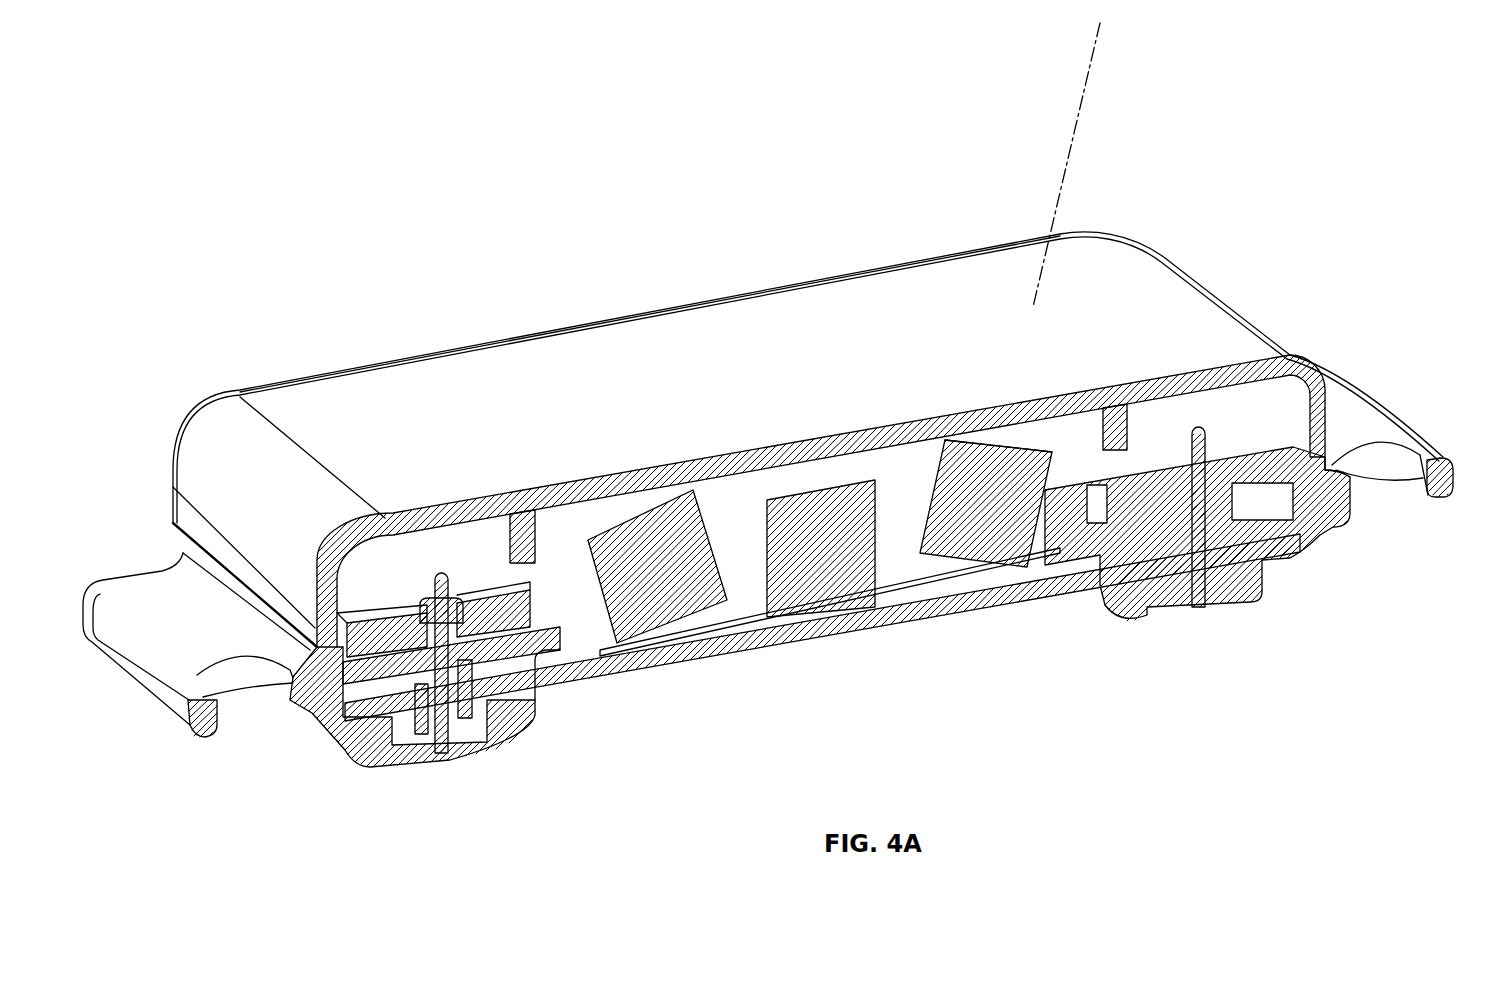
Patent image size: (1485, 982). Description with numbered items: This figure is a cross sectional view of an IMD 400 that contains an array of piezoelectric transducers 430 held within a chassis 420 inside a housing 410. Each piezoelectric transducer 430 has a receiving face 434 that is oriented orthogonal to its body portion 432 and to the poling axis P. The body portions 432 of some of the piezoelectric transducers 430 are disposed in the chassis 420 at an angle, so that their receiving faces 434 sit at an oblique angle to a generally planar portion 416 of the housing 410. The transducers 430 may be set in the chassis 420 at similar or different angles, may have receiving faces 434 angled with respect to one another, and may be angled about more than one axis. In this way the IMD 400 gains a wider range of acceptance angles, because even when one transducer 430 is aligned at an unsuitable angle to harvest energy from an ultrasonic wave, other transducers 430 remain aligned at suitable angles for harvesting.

The IMD 400 is at (237, 200).
The housing 410 is at (173, 470).
The generally planar portion 416 is at (435, 418).
The chassis 420 is at (617, 627).
The piezoelectric transducer 430 is at (653, 603).
The body portion 432 is at (1050, 553).
The receiving face 434 is at (1003, 447).
The poling axis P is at (1093, 72).